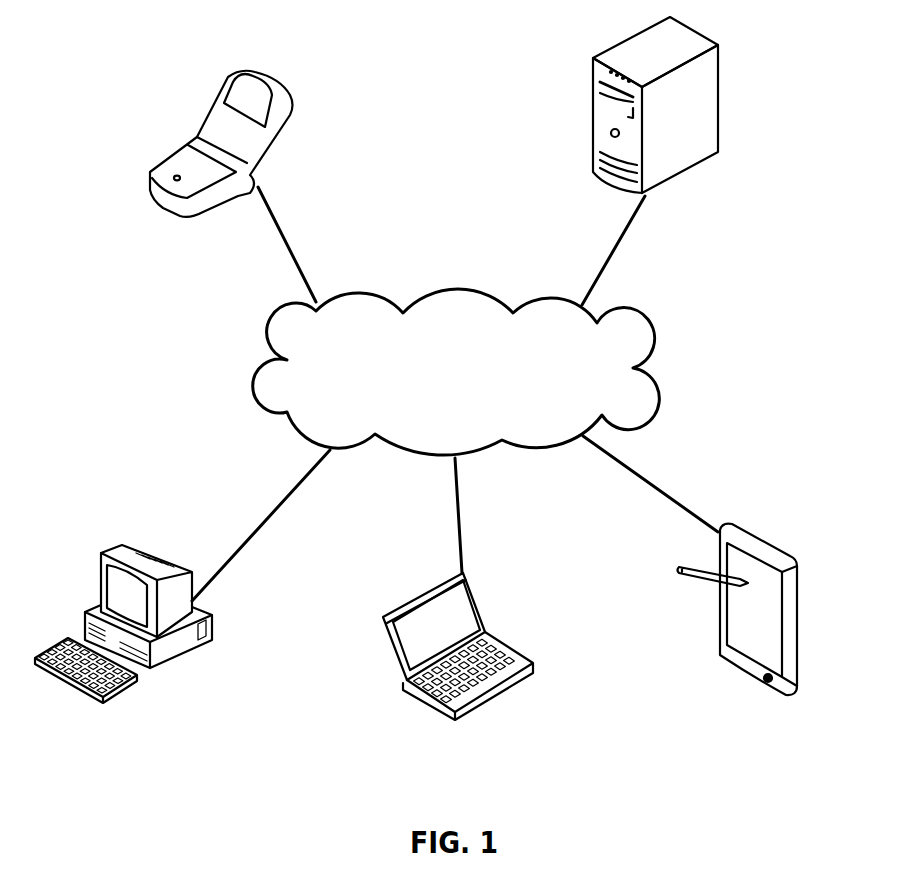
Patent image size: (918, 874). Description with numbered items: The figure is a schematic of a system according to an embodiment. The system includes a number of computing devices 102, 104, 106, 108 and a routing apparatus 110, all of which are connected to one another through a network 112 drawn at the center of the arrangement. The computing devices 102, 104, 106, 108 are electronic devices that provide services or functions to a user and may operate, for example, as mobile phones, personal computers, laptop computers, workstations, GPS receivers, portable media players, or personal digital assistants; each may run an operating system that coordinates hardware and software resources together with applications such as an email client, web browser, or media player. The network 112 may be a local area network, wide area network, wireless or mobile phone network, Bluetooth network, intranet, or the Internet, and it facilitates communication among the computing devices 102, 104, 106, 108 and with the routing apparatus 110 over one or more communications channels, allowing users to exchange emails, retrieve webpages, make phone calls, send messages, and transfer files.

The computing device 102 is at (165, 144).
The computing device 104 is at (737, 639).
The computing device 106 is at (455, 676).
The computing device 108 is at (136, 650).
The routing apparatus 110 is at (710, 105).
The network 112 is at (456, 372).